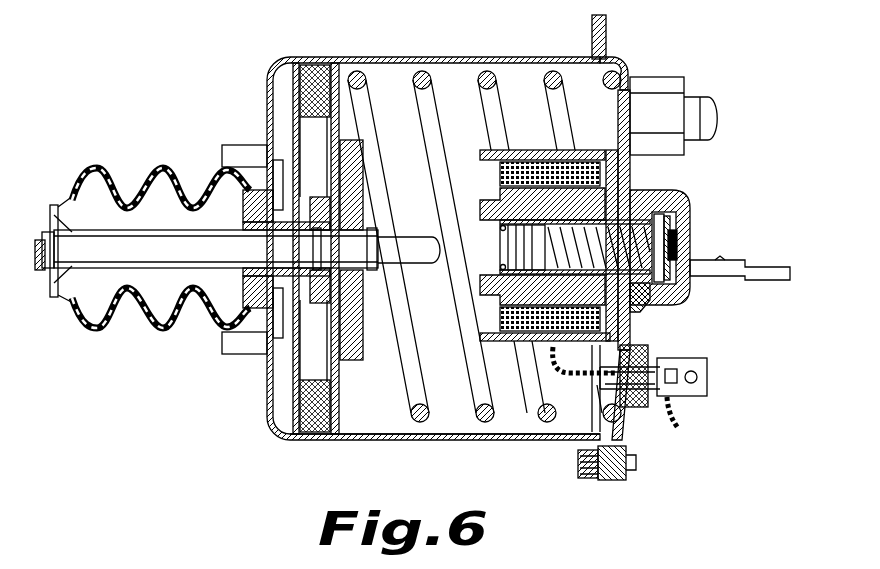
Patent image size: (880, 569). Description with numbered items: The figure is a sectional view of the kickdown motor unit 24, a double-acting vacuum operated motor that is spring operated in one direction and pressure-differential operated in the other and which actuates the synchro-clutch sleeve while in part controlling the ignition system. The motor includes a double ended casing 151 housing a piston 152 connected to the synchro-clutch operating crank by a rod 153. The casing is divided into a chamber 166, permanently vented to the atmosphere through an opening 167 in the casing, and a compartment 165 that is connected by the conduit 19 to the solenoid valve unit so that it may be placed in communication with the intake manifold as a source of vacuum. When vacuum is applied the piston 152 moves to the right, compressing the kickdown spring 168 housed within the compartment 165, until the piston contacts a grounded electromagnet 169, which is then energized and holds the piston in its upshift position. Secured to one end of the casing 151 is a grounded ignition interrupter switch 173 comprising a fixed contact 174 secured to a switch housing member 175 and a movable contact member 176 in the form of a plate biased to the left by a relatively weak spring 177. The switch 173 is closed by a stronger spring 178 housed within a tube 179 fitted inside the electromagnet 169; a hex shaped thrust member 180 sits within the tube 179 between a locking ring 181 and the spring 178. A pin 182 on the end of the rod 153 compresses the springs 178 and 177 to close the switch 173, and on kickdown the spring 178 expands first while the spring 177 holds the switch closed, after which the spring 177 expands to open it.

The kickdown motor unit 24 is at (324, 56).
The double ended casing 151 is at (408, 58).
The piston 152 is at (340, 168).
The rod 153 is at (165, 262).
The chamber 166 is at (283, 340).
The opening 167 is at (275, 406).
The compartment 165 is at (455, 427).
The kickdown spring 168 is at (485, 427).
The electromagnet 169 is at (523, 150).
The locking ring 181 is at (505, 224).
The pin 182 is at (423, 252).
The hex shaped thrust member 180 is at (520, 248).
The conduit 19 is at (693, 106).
The tube 179 is at (628, 190).
The movable contact member 176 is at (670, 208).
The spring 177 is at (684, 216).
The ignition interrupter switch 173 is at (700, 238).
The fixed contact 174 is at (688, 248).
The switch housing member 175 is at (672, 302).
The spring 178 is at (637, 300).